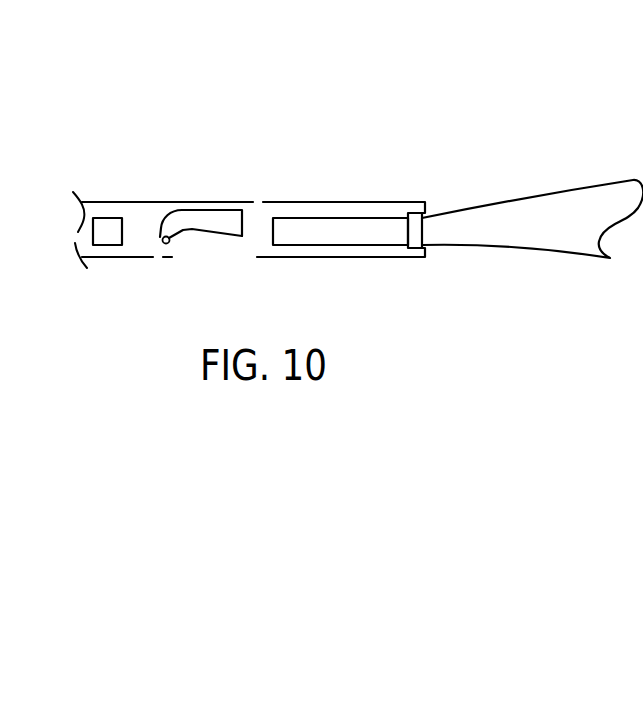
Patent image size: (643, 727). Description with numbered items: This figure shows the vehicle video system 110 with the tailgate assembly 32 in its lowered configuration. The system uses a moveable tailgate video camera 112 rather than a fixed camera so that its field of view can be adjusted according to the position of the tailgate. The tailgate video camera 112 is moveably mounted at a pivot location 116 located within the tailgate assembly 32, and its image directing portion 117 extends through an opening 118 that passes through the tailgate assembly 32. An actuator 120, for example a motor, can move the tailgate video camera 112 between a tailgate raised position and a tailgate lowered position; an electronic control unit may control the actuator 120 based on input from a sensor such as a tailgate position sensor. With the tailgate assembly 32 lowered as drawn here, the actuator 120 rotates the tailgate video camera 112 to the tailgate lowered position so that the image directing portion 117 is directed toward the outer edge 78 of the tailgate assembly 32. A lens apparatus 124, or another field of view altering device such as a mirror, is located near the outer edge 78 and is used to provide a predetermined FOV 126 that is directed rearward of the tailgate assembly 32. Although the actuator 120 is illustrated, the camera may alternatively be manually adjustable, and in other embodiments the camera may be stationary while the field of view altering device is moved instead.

The vehicle video system 110 is at (313, 113).
The tailgate assembly 32 is at (127, 195).
The tailgate video camera 112 is at (203, 197).
The pivot location 116 is at (165, 244).
The image directing portion 117 is at (240, 216).
The opening 118 is at (240, 247).
The actuator 120 is at (95, 230).
The lens apparatus 124 is at (352, 213).
The outer edge 78 is at (427, 204).
The predetermined FOV 126 is at (563, 182).